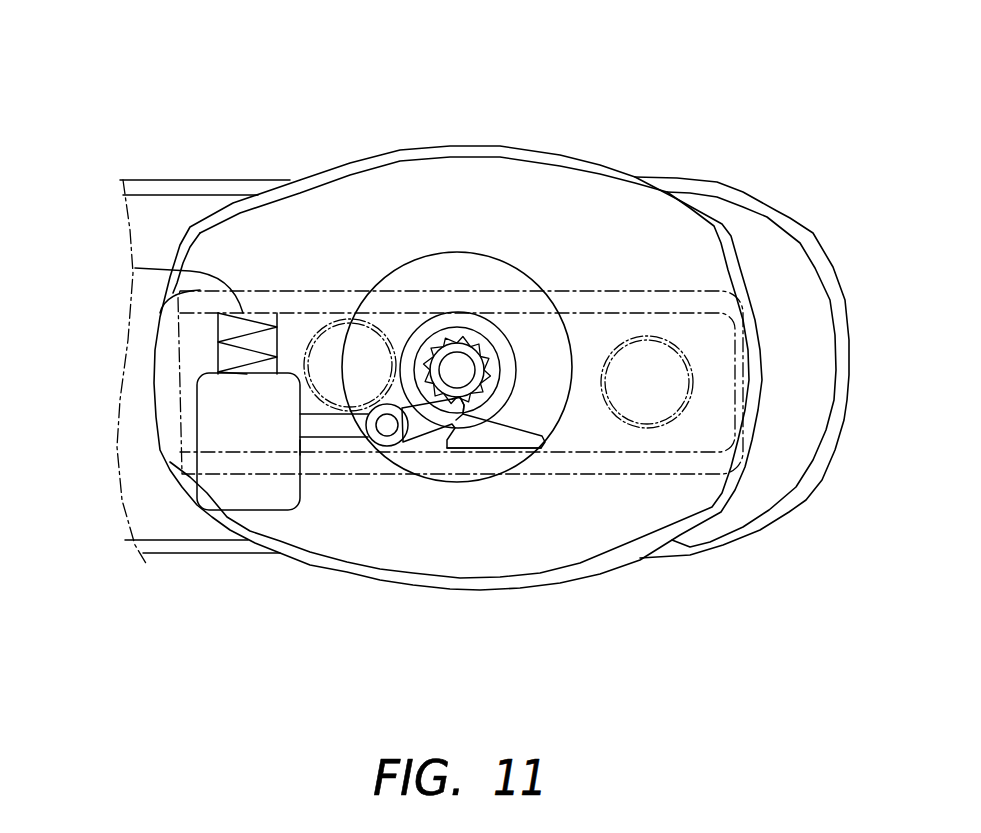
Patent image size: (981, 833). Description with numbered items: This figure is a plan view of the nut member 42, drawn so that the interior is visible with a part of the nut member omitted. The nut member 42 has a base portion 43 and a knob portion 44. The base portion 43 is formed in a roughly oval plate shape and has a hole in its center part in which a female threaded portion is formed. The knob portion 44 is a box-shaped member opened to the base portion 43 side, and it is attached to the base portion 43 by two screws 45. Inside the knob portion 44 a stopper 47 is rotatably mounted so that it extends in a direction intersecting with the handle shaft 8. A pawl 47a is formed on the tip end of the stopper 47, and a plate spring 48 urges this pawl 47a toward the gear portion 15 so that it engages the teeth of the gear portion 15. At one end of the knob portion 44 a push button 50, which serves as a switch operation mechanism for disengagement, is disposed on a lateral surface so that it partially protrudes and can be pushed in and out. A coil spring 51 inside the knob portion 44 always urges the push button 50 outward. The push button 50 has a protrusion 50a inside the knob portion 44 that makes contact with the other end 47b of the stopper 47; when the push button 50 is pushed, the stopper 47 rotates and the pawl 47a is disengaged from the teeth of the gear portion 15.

The handle shaft 8 is at (477, 437).
The gear portion 15 is at (444, 256).
The nut member 42 is at (458, 308).
The base portion 43 is at (459, 310).
The knob portion 44 is at (499, 310).
The screws 45 is at (572, 251).
The stopper 47 is at (455, 523).
The pawl 47a is at (473, 542).
The other end of the stopper 47b is at (289, 277).
The plate spring 48 is at (494, 545).
The push button 50 is at (248, 478).
The protrusion 50a is at (342, 568).
The coil spring 51 is at (135, 268).